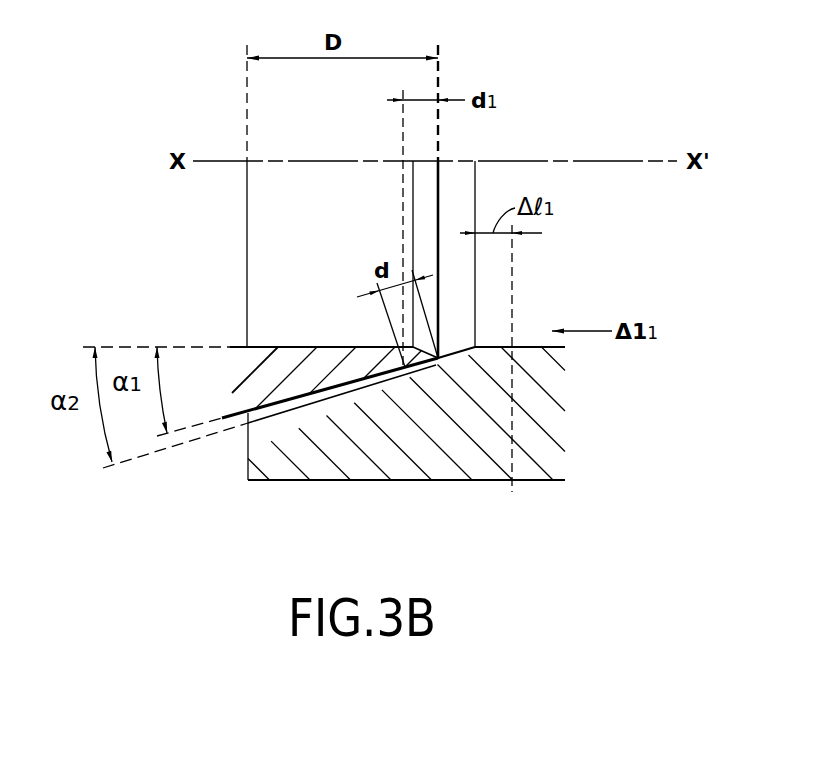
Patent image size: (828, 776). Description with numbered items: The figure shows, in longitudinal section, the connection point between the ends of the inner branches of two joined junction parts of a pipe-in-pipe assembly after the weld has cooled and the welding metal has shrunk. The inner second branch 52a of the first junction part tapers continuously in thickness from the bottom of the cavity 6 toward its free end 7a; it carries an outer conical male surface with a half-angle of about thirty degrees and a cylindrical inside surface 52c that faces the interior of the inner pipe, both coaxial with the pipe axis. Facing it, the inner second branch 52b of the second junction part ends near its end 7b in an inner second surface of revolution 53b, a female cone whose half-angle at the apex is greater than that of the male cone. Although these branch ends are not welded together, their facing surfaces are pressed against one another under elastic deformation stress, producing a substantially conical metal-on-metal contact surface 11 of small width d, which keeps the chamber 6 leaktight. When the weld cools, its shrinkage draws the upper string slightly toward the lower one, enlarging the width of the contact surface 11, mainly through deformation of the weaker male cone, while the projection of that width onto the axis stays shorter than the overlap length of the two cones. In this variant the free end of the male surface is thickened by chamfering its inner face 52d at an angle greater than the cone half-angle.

The cavity 6 is at (406, 431).
The free end of inner second branch of first junction part 7a is at (451, 350).
The end of inner second branch of second junction part 7b is at (248, 466).
The contact surface 11 is at (434, 362).
The inner second branch of first junction part 52a is at (297, 375).
The inner second branch of second junction part 52b is at (317, 440).
The inside surface 52c is at (308, 347).
The inner face 52d is at (424, 349).
The inner second surface of revolution 53b is at (272, 458).